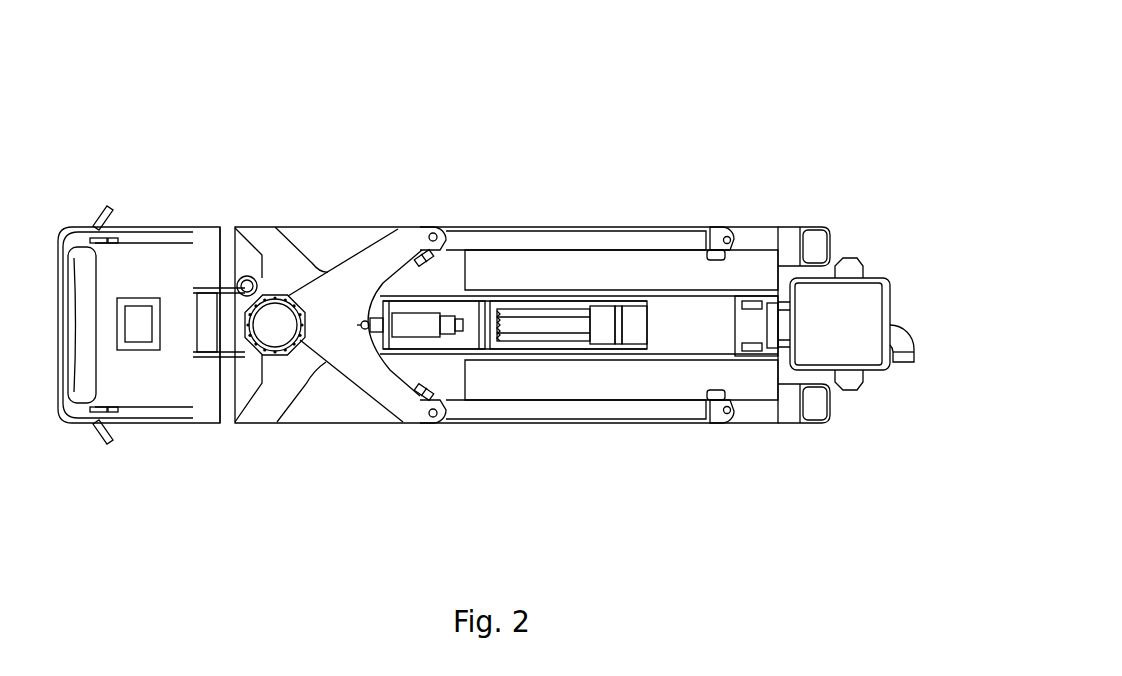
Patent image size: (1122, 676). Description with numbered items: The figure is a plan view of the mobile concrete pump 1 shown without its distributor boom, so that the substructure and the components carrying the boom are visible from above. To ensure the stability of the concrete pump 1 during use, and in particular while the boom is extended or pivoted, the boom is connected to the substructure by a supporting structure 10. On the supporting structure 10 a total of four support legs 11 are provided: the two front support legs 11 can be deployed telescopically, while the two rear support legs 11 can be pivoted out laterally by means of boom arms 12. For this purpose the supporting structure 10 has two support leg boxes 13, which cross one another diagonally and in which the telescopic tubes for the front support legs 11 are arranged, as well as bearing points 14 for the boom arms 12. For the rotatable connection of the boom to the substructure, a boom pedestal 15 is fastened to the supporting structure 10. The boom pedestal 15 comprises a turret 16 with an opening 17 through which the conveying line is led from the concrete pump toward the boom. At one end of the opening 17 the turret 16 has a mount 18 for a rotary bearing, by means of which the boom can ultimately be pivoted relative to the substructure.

The mobile concrete pump 1 is at (886, 182).
The supporting structure 10 is at (333, 254).
The support legs 11 is at (245, 208).
The boom arms 12 is at (596, 226).
The support leg boxes 13 is at (296, 240).
The bearing points 14 is at (432, 228).
The boom pedestal 15 is at (275, 370).
The turret 16 is at (243, 325).
The opening 17 is at (287, 322).
The mount 18 is at (305, 342).